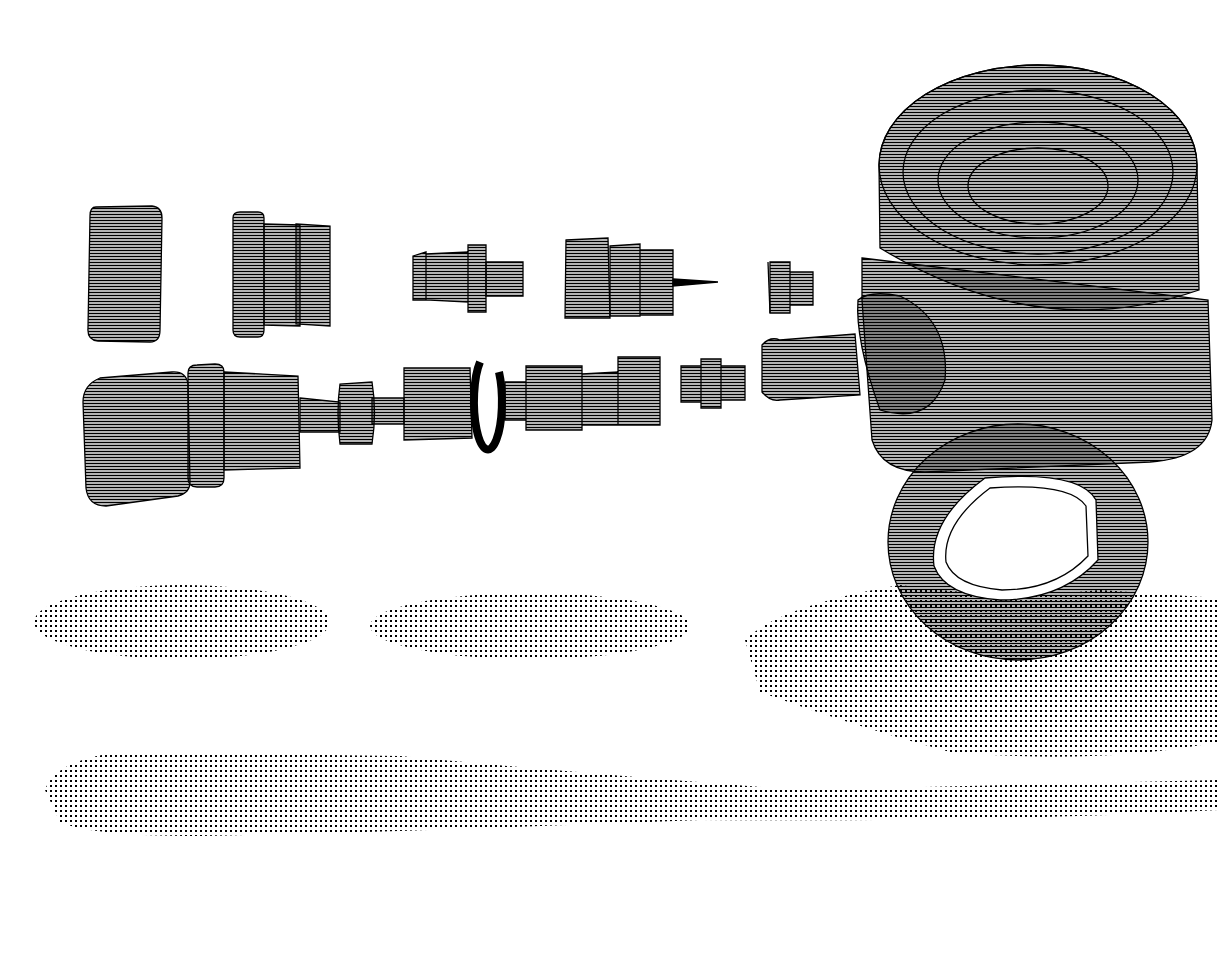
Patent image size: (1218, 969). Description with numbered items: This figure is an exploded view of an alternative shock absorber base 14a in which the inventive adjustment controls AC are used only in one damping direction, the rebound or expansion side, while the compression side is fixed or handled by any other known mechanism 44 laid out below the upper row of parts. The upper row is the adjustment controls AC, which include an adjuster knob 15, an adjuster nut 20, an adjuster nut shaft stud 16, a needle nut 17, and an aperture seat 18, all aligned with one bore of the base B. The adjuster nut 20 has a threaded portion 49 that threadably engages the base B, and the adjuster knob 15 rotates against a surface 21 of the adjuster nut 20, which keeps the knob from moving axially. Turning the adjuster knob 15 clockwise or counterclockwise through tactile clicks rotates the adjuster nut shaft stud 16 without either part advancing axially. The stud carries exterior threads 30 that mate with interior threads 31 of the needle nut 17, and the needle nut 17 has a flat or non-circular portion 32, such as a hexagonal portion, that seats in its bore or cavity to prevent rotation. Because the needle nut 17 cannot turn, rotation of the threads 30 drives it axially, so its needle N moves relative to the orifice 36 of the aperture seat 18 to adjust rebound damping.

The valve assembly 14a is at (1217, 66).
The base B is at (885, 116).
The adjustment controls AC is at (824, 79).
The adjuster knob 15 is at (163, 212).
The adjuster nut 20 is at (308, 216).
The surface 21 is at (215, 247).
The threaded portion 49 is at (334, 222).
The adjuster nut shaft stud 16 is at (472, 248).
The threads 30 is at (503, 252).
The non-circular portion 32 is at (576, 236).
The threads 31 is at (545, 278).
The needle nut 17 is at (626, 242).
The needle N is at (700, 276).
The aperture seat 18 is at (793, 262).
The orifice 36 is at (762, 280).
The mechanism 44 is at (850, 437).